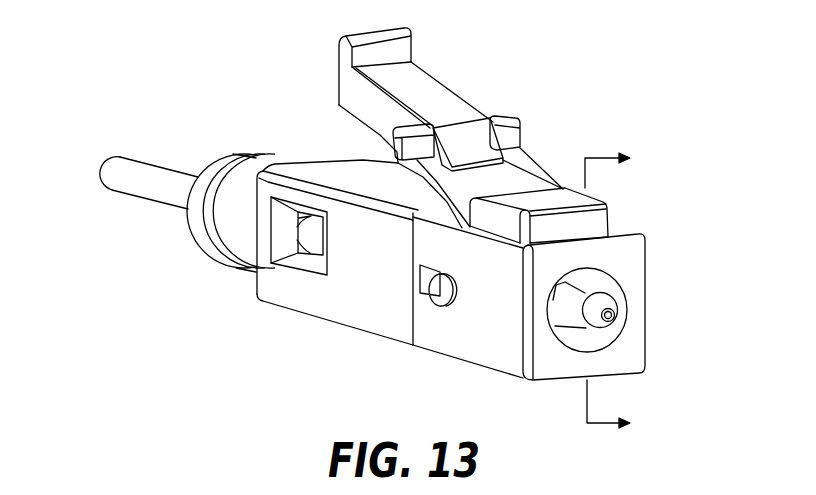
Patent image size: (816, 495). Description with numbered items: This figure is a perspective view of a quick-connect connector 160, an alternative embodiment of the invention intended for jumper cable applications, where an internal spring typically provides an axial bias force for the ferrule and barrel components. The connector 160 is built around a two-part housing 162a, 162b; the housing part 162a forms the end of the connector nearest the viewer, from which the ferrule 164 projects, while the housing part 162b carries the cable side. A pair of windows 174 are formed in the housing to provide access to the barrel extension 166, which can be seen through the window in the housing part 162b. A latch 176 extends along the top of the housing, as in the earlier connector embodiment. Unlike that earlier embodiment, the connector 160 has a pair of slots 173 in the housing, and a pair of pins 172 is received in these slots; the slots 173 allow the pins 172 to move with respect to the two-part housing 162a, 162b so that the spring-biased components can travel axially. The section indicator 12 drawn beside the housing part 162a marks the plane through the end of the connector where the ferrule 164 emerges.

The quick-connect connector 160 is at (582, 82).
The housing 162a is at (490, 330).
The housing 162b is at (337, 293).
The ferrule 164 is at (572, 307).
The barrel extension 166 is at (315, 228).
The pin 172 is at (440, 293).
The slot 173 is at (420, 275).
The window 174 is at (300, 257).
The latch 176 is at (430, 100).
The section line 12- 12 is at (623, 289).